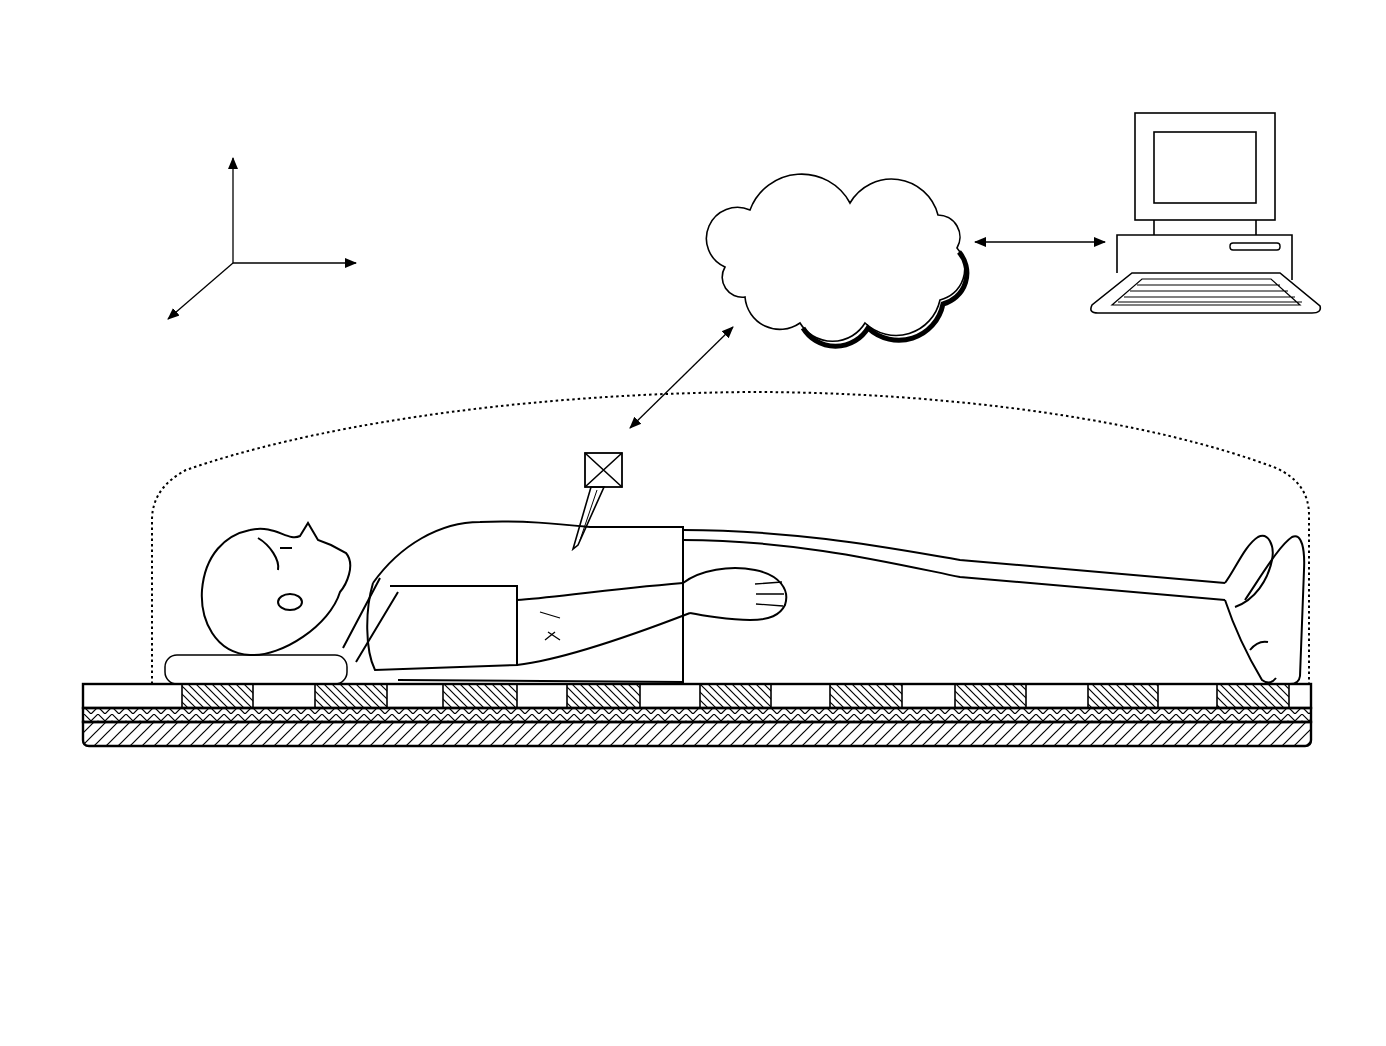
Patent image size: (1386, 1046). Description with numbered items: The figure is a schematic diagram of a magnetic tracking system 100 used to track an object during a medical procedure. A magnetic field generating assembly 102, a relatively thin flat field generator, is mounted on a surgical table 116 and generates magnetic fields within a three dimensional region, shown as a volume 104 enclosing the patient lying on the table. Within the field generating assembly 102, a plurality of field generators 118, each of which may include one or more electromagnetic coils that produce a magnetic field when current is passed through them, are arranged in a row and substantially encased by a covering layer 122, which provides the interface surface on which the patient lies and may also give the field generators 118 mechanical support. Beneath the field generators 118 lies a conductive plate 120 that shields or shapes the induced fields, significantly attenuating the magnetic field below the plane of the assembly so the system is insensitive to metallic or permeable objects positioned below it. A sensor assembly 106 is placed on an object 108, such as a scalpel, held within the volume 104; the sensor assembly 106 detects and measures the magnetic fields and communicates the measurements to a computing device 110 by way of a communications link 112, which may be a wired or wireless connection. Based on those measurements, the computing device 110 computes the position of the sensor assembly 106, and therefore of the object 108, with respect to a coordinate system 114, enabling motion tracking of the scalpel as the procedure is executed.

The magnetic tracking system 100 is at (634, 161).
The magnetic field generating assembly 102 is at (698, 712).
The volume 104 is at (730, 538).
The sensor assembly 106 is at (630, 466).
The object 108 is at (581, 506).
The computing device 110 is at (1205, 233).
The communications link 112 is at (814, 278).
The coordinate system 114 is at (270, 252).
The surgical table 116 is at (1270, 746).
The field generators 118 is at (594, 694).
The conductive plate 120 is at (1316, 713).
The covering layer 122 is at (110, 681).